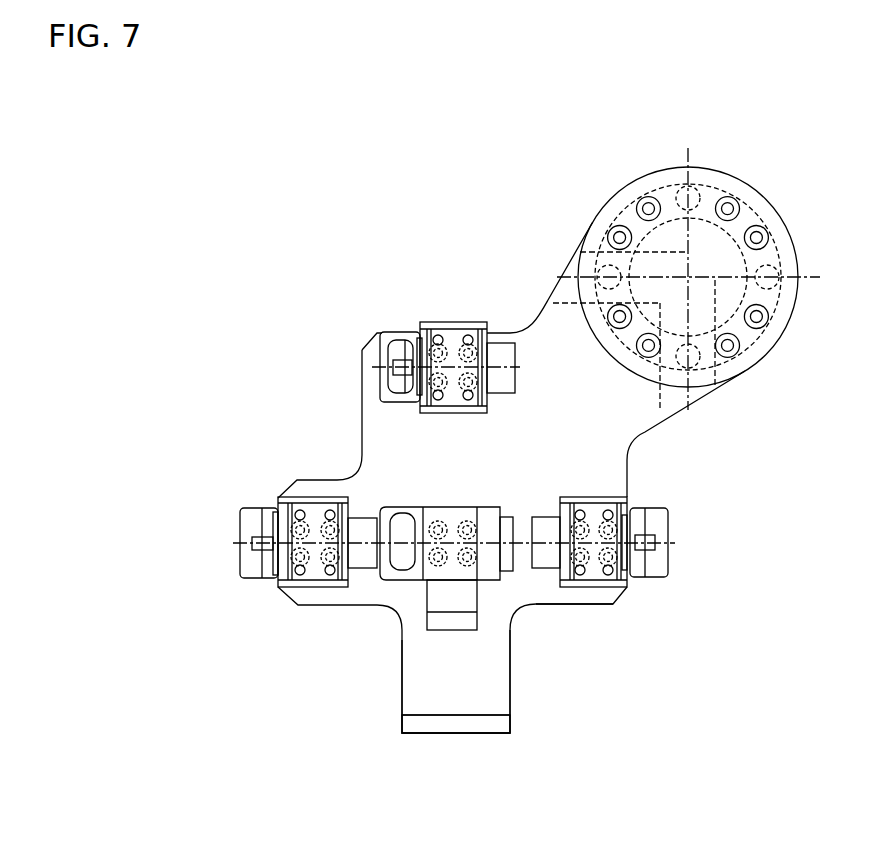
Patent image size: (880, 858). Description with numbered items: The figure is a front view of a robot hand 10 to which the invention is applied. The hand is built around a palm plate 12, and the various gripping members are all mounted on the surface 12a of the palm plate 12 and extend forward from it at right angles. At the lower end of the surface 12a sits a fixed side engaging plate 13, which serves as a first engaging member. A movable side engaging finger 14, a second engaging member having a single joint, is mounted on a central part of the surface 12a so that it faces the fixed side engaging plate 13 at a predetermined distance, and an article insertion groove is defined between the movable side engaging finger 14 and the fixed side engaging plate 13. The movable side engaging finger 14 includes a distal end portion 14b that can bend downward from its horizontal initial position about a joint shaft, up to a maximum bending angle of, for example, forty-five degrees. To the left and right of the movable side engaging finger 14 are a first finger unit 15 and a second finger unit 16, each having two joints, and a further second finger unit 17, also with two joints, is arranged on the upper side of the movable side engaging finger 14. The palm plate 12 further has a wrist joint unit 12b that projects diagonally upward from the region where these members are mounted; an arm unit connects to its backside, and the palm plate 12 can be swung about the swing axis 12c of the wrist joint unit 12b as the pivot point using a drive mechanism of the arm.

The robot hand 10 is at (300, 369).
The palm plate 12 is at (523, 660).
The surface of the palm plate 12a is at (492, 597).
The wrist joint unit 12b is at (604, 190).
The swing axis 12c is at (697, 267).
The fixed side engaging plate 13 is at (460, 750).
The movable side engaging finger 14 is at (410, 591).
The distal end portion 14b is at (433, 598).
The first finger unit 15 is at (262, 587).
The second finger unit 16 is at (606, 597).
The second finger unit 17 is at (460, 312).